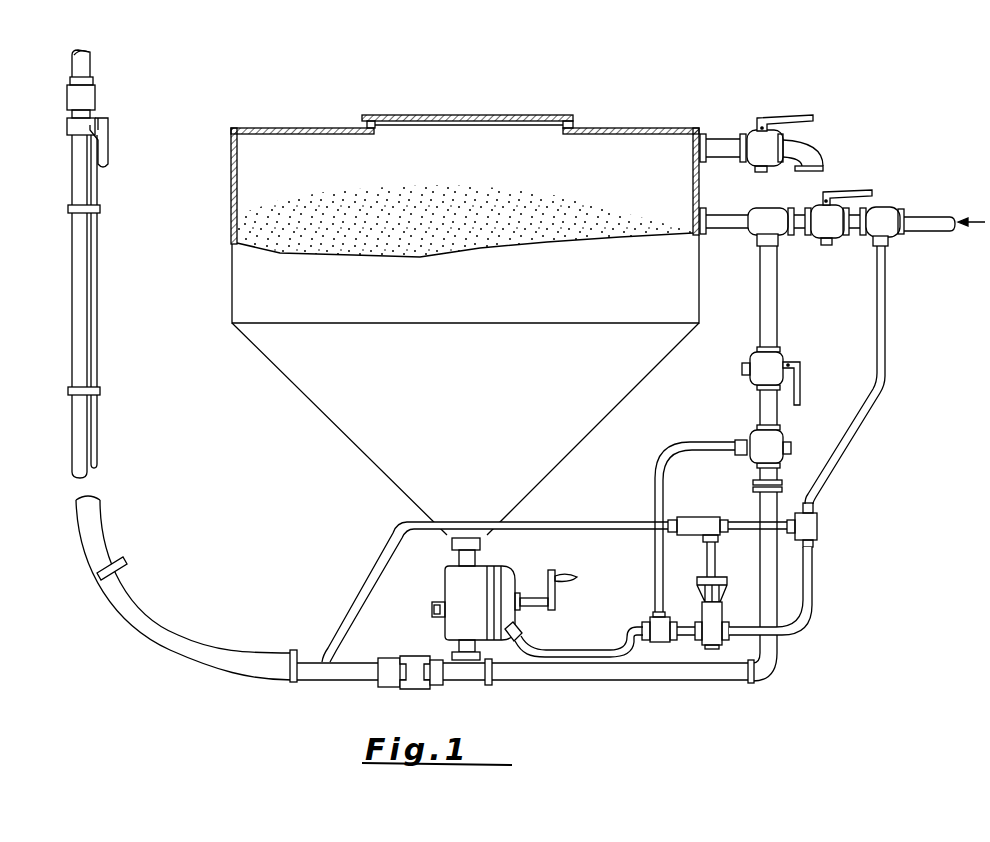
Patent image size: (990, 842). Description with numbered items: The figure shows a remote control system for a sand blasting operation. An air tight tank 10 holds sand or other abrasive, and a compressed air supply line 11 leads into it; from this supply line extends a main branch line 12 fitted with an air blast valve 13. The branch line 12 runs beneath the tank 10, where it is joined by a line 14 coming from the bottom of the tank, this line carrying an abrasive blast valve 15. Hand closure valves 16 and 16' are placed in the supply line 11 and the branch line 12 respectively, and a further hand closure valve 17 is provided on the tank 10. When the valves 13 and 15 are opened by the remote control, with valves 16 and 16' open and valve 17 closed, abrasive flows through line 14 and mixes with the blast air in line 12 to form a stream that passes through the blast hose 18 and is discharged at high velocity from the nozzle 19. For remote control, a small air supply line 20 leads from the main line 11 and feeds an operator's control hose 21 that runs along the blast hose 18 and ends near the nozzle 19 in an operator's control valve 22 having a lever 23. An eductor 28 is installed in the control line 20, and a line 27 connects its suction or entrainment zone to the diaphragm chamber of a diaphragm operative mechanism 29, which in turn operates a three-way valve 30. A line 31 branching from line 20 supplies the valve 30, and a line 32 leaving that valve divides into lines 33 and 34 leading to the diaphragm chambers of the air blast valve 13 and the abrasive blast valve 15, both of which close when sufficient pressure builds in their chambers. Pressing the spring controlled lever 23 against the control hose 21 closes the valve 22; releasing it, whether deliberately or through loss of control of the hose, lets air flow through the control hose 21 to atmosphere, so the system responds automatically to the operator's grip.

The tank 10 is at (447, 299).
The compressed air supply line 11 is at (920, 221).
The main branch line 12 is at (772, 283).
The air blast valve 13 is at (773, 445).
The line from bottom of tank 14 is at (458, 557).
The abrasive blast valve 15 is at (483, 583).
The hand closure valve 16 is at (786, 233).
The hand closure valve 16' is at (783, 364).
The hand closure valve 17 is at (780, 143).
The blast hose 18 is at (82, 518).
The nozzle 19 is at (85, 68).
The small air supply line 20 is at (885, 363).
The operator's control hose 21 is at (98, 447).
The operator's control valve 22 is at (82, 130).
The lever 23 is at (110, 150).
The line 27 is at (712, 557).
The eductor 28 is at (698, 520).
The diaphragm operative mechanism 29 is at (738, 579).
The three-way valve 30 is at (715, 633).
The line 31 is at (812, 597).
The line 32 is at (688, 633).
The line 33 is at (658, 573).
The line 34 is at (580, 654).